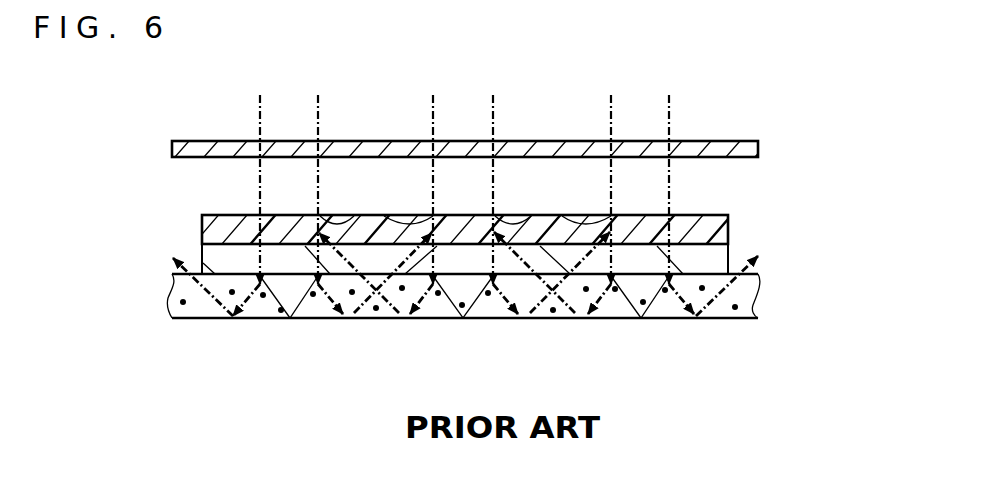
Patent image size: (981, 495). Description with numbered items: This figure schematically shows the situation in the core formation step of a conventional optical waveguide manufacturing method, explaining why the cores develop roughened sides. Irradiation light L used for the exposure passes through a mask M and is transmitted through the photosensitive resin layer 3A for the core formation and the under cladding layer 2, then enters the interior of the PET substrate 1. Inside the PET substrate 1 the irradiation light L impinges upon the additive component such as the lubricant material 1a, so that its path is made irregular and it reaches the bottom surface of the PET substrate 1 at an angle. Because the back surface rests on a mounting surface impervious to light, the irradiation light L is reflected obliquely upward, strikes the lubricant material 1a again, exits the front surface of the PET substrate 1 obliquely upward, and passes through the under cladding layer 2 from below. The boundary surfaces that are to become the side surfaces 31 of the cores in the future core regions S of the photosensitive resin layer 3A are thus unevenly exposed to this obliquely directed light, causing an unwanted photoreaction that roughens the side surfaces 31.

The PET substrate 1 is at (743, 296).
The lubricant material 1a is at (179, 302).
The under cladding layer 2 is at (713, 257).
The photosensitive resin layer for the core formation 3A is at (713, 227).
The side surfaces of the cores 31 is at (382, 214).
The mask M is at (757, 149).
The irradiation light L is at (493, 106).
The future core regions S is at (262, 340).